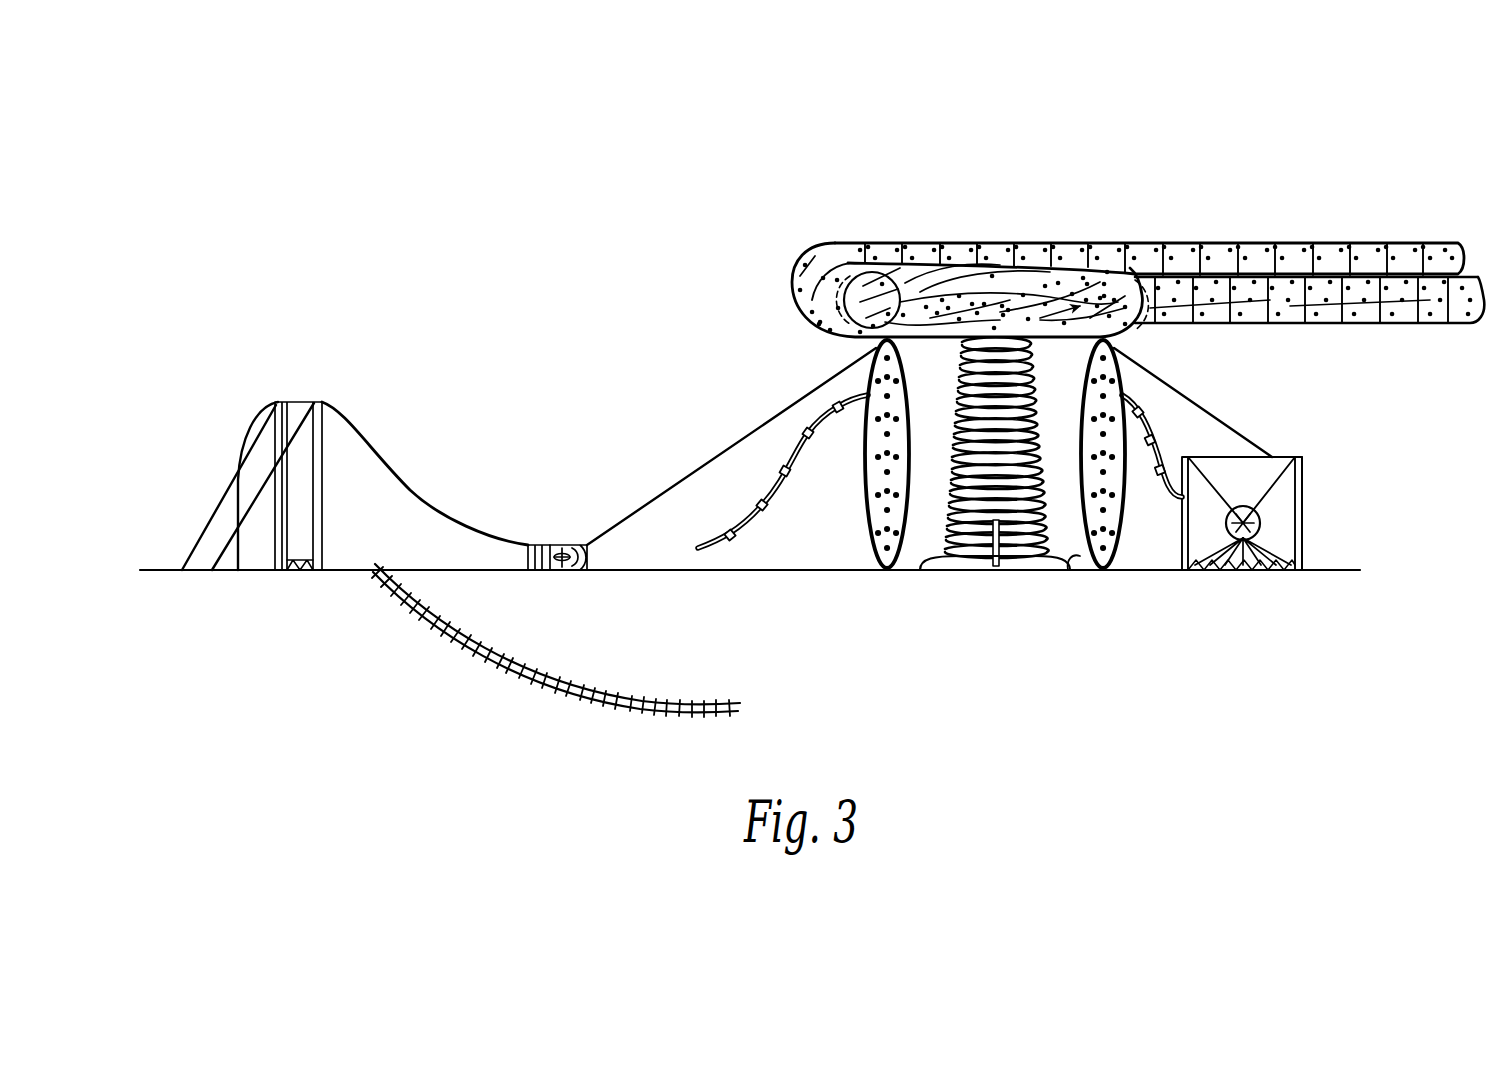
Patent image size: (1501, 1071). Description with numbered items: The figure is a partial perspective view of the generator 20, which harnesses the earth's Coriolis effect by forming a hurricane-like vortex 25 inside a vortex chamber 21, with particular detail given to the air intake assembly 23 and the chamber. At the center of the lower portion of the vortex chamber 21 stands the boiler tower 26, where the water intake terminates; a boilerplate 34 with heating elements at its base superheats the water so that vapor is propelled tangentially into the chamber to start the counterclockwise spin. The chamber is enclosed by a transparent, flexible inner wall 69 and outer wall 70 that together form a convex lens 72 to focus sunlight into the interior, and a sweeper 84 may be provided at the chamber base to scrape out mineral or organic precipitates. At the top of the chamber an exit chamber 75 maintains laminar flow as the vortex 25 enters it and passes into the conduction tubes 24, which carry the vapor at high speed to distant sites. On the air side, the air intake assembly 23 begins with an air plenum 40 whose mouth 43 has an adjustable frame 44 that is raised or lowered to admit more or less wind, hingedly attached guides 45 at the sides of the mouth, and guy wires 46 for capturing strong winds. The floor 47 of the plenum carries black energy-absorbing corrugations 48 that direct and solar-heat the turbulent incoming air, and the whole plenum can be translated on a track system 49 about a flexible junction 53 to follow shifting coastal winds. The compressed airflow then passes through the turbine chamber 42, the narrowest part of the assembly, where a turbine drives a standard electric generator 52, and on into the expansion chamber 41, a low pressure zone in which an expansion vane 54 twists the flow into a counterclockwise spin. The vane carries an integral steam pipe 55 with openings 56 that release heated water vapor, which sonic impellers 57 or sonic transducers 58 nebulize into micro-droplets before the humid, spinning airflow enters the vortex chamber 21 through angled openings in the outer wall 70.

The generator 20 is at (672, 232).
The vortex chamber 21 is at (890, 464).
The air intake assembly 23 is at (432, 424).
The conduction tubes 24 is at (1255, 243).
The vortex 25 is at (952, 460).
The boiler tower 26 is at (1000, 576).
The boilerplate 34 is at (958, 575).
The air plenum 40 is at (332, 433).
The expansion chamber 41 is at (712, 457).
The turbine chamber 42 is at (560, 545).
The mouth 43 is at (1262, 532).
The adjustable frame 44 is at (300, 573).
The guides 45 is at (247, 575).
The guy wires 46 is at (220, 520).
The floor 47 is at (1205, 572).
The corrugations 48 is at (1302, 567).
The track system 49 is at (612, 680).
The electric generator 52 is at (565, 573).
The flexible junction 53 is at (535, 545).
The expansion vane 54 is at (732, 524).
The steam pipe 55 is at (772, 492).
The openings 56 is at (1158, 473).
The sonic impellers 57 is at (785, 478).
The sonic transducers 58 is at (805, 435).
The inner wall 69 is at (908, 397).
The outer wall 70 is at (870, 378).
The convex lens 72 is at (1124, 378).
The exit chamber 75 is at (958, 242).
The sweeper 84 is at (1075, 572).